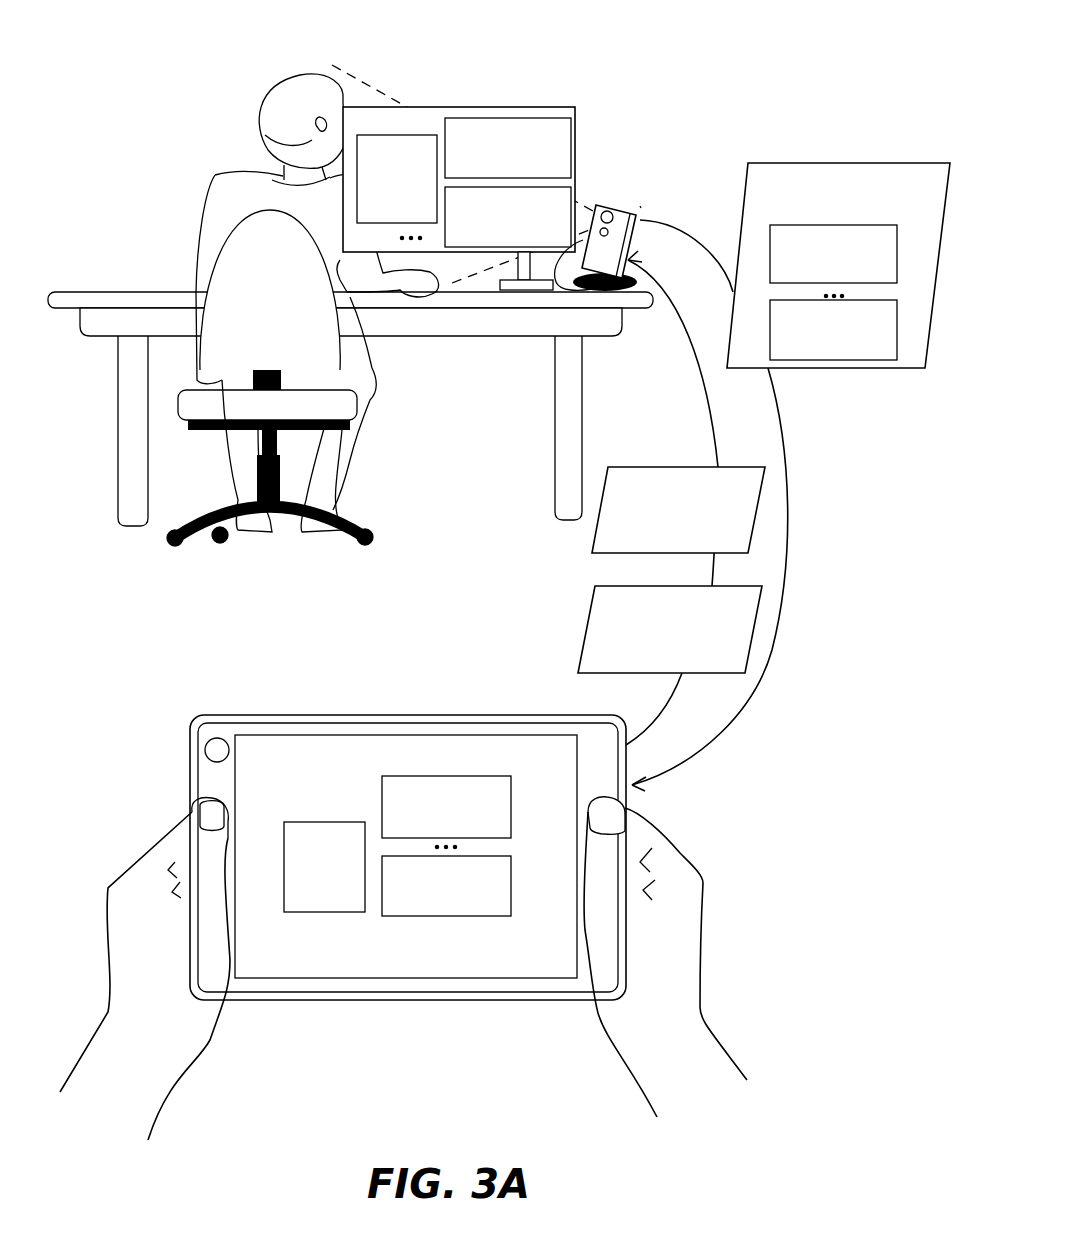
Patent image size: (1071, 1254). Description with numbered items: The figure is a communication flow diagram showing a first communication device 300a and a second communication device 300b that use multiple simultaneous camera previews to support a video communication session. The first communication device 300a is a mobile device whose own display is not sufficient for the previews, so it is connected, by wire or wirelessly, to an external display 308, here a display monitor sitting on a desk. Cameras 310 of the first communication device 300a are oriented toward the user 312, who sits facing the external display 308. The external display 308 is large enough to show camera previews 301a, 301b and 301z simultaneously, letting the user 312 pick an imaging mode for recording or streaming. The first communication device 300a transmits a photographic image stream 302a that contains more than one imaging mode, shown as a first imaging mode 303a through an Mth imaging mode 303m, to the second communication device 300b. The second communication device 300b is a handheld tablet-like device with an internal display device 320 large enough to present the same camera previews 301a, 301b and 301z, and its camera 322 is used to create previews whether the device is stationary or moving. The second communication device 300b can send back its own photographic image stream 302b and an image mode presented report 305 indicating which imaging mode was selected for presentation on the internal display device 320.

The first communication device 300a is at (640, 205).
The second communication device 300b is at (262, 714).
The camera preview 301a is at (360, 523).
The camera preview 301b is at (476, 478).
The camera preview 301z is at (476, 551).
The photographic image stream 302a is at (838, 265).
The photographic image stream 302b is at (678, 510).
The first imaging mode 303a is at (833, 254).
The Mth imaging mode 303m is at (833, 330).
The image mode presented report 305 is at (670, 629).
The external display 308 is at (505, 107).
The cameras 310 is at (605, 200).
The user 312 is at (228, 172).
The internal display device 320 is at (300, 760).
The camera 322 is at (208, 742).